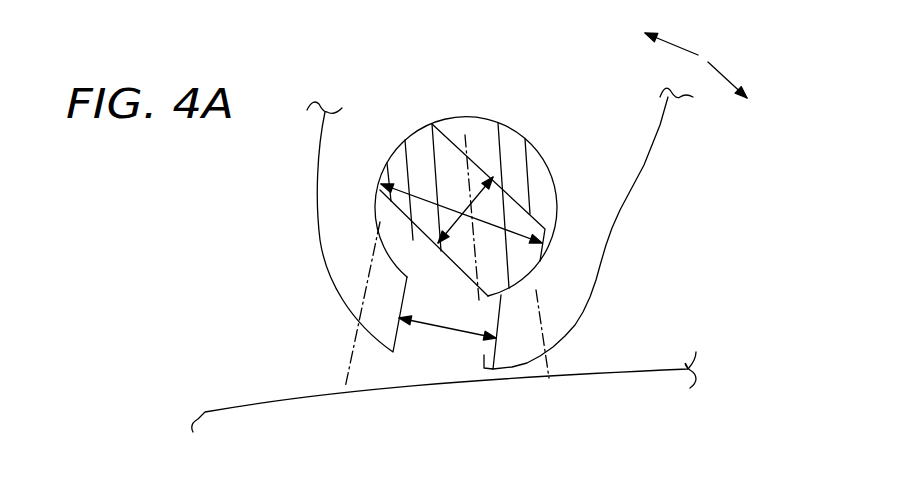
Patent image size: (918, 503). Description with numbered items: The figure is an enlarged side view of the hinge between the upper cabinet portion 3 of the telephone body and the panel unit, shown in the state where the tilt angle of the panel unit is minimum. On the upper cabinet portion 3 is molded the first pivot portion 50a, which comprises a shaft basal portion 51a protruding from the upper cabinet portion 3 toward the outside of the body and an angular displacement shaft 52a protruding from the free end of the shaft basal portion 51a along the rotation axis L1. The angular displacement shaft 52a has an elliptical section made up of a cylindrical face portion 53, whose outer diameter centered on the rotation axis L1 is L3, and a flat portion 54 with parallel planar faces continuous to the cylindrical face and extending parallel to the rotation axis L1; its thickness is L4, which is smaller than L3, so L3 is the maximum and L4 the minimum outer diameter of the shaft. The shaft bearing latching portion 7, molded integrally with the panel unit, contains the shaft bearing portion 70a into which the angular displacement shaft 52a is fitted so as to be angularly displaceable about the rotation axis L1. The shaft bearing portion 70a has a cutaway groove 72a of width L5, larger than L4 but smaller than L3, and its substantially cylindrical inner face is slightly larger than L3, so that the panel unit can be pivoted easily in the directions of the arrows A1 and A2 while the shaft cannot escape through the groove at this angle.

The upper cabinet portion 3 is at (221, 430).
The shaft bearing latching portion 7 is at (650, 166).
The first pivot portion 50a is at (340, 327).
The shaft basal portion 51a is at (360, 376).
The angular displacement shaft 52a is at (433, 328).
The cylindrical face portion 53 is at (410, 141).
The flat portion 54 is at (378, 225).
The shaft bearing portion 70a is at (563, 310).
The cutaway groove 72a is at (484, 355).
The direction of pivoting A1 is at (676, 38).
The direction of pivoting A2 is at (723, 66).
The rotation axis L1 is at (480, 230).
The outer diameter of cylindrical face portion L3 is at (430, 202).
The thickness dimension of flat portion L4 is at (464, 212).
The width of cutaway groove L5 is at (434, 333).